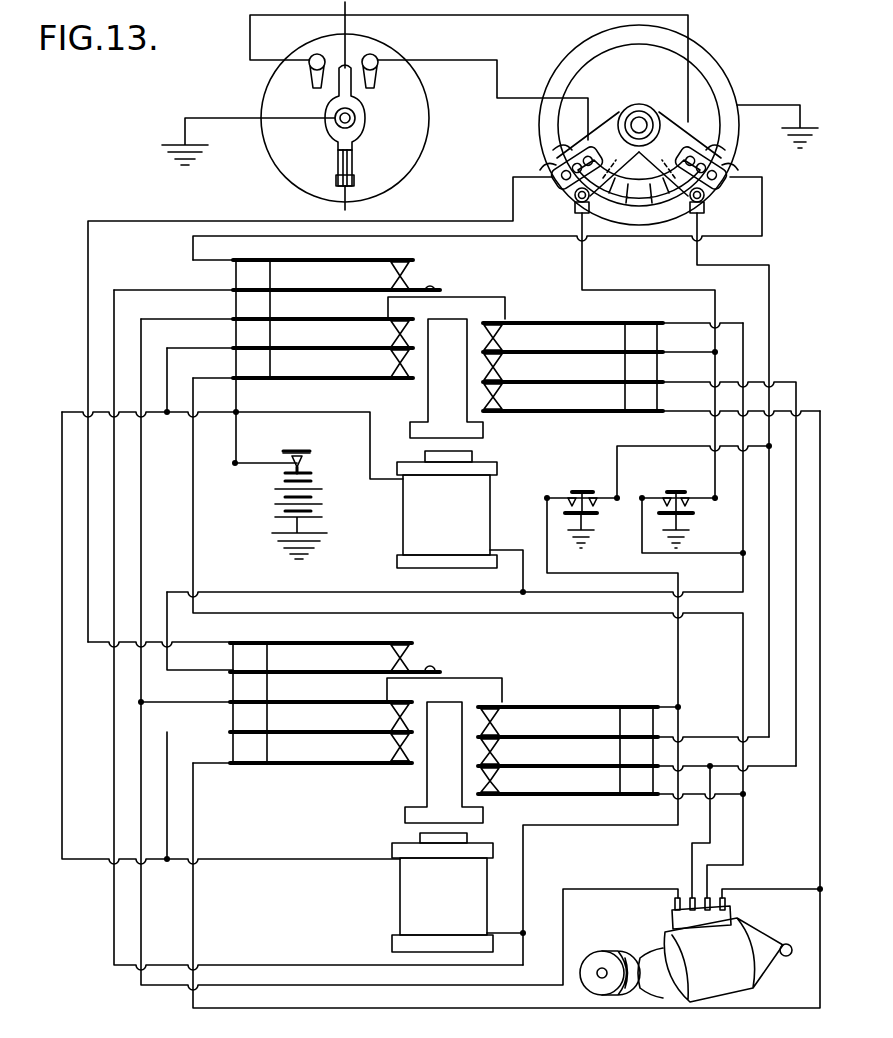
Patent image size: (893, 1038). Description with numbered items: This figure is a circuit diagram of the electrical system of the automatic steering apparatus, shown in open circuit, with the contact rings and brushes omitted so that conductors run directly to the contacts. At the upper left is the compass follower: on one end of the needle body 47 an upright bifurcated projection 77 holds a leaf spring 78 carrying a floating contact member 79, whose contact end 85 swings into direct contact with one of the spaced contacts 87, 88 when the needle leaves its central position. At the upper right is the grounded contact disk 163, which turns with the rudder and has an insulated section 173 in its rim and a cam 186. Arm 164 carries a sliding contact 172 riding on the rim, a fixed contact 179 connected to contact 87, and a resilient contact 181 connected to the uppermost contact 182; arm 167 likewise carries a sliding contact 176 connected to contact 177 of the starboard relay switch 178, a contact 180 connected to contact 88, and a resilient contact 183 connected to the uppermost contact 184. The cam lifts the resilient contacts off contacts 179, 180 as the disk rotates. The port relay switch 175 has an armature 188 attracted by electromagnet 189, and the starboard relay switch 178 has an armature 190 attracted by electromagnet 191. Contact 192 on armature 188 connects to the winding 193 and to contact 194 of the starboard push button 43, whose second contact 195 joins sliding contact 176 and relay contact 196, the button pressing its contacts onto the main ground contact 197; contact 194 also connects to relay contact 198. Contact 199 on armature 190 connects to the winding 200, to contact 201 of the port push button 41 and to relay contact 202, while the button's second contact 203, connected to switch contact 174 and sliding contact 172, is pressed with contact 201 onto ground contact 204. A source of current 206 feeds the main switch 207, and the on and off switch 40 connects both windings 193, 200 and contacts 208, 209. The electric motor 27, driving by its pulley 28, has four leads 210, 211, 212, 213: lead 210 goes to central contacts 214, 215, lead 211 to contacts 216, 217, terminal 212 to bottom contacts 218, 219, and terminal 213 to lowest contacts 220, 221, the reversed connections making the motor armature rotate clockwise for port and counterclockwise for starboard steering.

The electric motor 27 is at (768, 978).
The pulley 28 is at (602, 950).
The on and off switch 40 is at (302, 452).
The port push button 41 is at (675, 488).
The starboard push button 43 is at (585, 488).
The needle body 47 is at (338, 162).
The bifurcated projection 77 is at (354, 182).
The leaf spring 78 is at (352, 160).
The floating contact member 79 is at (336, 126).
The contact end 85 is at (340, 92).
The contact 87 is at (313, 84).
The contact 88 is at (373, 88).
The contact disk 163 is at (736, 94).
The arm 164 is at (562, 190).
The arm 167 is at (716, 190).
The sliding contact 172 is at (574, 207).
The insulated section 173 is at (646, 212).
The switch contact 174 is at (503, 370).
The port relay switch 175 is at (508, 290).
The sliding contact 176 is at (706, 208).
The contact 177 is at (573, 735).
The starboard relay switch 178 is at (507, 671).
The contact 179 is at (598, 154).
The contact 180 is at (680, 154).
The resilient contact 181 is at (548, 156).
The uppermost contact 182 is at (410, 270).
The resilient contact 183 is at (732, 156).
The uppermost contact 184 is at (410, 648).
The cam 186 is at (640, 186).
The armature 188 is at (484, 436).
The electromagnet 189 is at (498, 468).
The armature 190 is at (404, 806).
The electromagnet 191 is at (392, 941).
The contact 192 is at (436, 292).
The winding 193 is at (406, 910).
The contact 194 is at (568, 498).
The contact 195 is at (596, 503).
The contact 196 is at (500, 752).
The ground contact 197 is at (566, 525).
The contact 198 is at (520, 708).
The contact 199 is at (436, 672).
The winding 200 is at (480, 516).
The contact 201 is at (662, 498).
The contact 202 is at (555, 315).
The contact 203 is at (687, 500).
The ground contact 204 is at (694, 516).
The source of current 206 is at (270, 497).
The main switch 207 is at (313, 474).
The contact 208 is at (390, 360).
The contact 209 is at (390, 744).
The motor lead 210 is at (674, 906).
The motor lead 211 is at (688, 898).
The motor terminal 212 is at (710, 898).
The motor terminal 213 is at (728, 904).
The central contact 214 is at (390, 332).
The central contact 215 is at (390, 714).
The contact 216 is at (503, 340).
The contact 217 is at (500, 724).
The bottom contact 218 is at (400, 381).
The bottom contact 219 is at (495, 798).
The lowest contact 220 is at (506, 414).
The lowest contact 221 is at (395, 765).